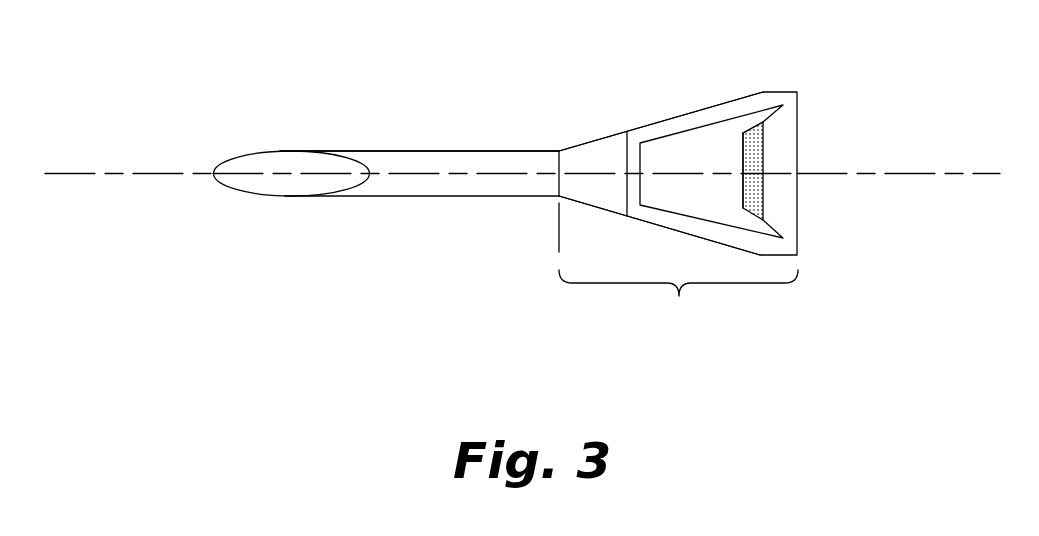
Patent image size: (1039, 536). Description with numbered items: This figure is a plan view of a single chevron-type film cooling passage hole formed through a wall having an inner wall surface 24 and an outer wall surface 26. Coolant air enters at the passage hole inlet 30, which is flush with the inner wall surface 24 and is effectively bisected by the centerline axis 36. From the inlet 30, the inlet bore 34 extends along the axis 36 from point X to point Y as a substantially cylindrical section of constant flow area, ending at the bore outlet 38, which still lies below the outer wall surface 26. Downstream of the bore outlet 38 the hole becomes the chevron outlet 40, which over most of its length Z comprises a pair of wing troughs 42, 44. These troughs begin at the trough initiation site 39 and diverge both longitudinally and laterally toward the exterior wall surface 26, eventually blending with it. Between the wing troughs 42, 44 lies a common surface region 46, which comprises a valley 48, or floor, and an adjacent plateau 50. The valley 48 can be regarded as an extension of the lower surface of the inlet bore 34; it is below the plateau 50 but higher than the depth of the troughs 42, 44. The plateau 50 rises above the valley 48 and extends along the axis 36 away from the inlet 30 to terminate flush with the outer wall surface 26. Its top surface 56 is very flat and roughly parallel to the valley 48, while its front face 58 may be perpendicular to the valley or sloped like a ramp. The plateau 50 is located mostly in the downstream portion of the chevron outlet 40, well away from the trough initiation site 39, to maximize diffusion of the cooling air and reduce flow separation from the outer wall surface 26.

The inner wall surface 24 is at (281, 173).
The outer wall surface 26 is at (931, 129).
The inlet 30 is at (288, 197).
The inlet bore 34 is at (442, 183).
The centerline axis 36 is at (403, 173).
The bore outlet 38 is at (558, 151).
The trough initiation site 39 is at (626, 200).
The chevron outlet 40 is at (782, 182).
The wing trough 42 is at (649, 133).
The wing trough 44 is at (730, 233).
The common surface region 46 is at (680, 200).
The valley 48 is at (706, 164).
The plateau 50 is at (762, 132).
The top surface 56 is at (753, 165).
The front face 58 is at (743, 153).